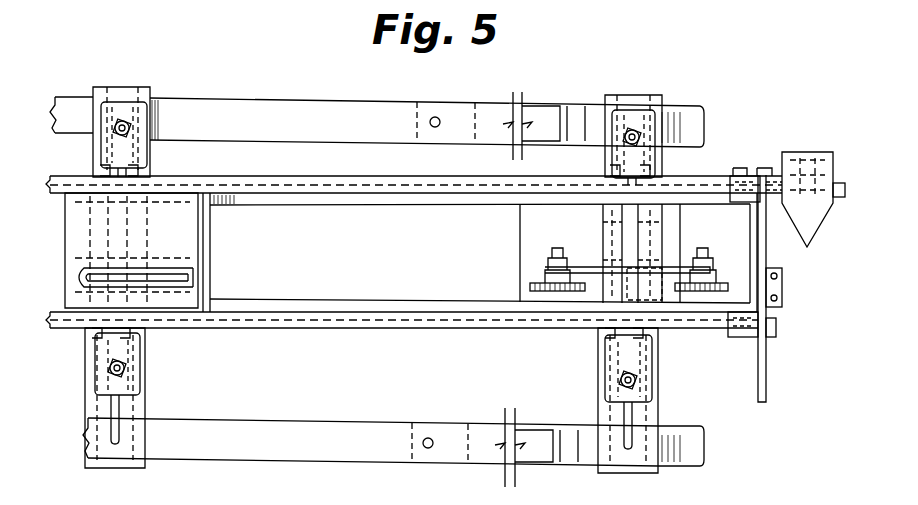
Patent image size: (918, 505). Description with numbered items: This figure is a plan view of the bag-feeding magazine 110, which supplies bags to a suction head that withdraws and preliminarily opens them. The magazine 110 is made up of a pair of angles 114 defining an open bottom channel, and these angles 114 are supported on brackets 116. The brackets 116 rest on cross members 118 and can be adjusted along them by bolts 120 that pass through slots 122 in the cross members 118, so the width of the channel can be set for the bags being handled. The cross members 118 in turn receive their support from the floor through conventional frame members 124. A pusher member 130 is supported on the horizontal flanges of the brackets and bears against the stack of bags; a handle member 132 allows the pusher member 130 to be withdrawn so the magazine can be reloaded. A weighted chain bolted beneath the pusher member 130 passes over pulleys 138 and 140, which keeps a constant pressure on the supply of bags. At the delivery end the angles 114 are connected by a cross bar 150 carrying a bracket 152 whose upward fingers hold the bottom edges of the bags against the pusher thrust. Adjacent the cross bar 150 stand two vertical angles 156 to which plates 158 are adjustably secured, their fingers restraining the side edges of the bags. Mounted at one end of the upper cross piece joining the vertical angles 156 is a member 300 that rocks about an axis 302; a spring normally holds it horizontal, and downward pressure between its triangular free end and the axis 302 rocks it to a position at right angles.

The magazine 110 is at (363, 330).
The angles 114 is at (400, 206).
The brackets 116 is at (106, 150).
The cross members 118 is at (150, 92).
The bolts 120 is at (130, 128).
The slots 122 is at (150, 148).
The frame members 124 is at (355, 110).
The pusher member 130 is at (208, 253).
The handle member 132 is at (153, 272).
The pulley 138 is at (725, 280).
The pulley 140 is at (535, 293).
The cross bar 150 is at (772, 258).
The bracket 152 is at (784, 292).
The vertical angles 156 is at (765, 350).
The plates 158 is at (776, 330).
The member 300 is at (792, 152).
The axis 302 is at (845, 183).